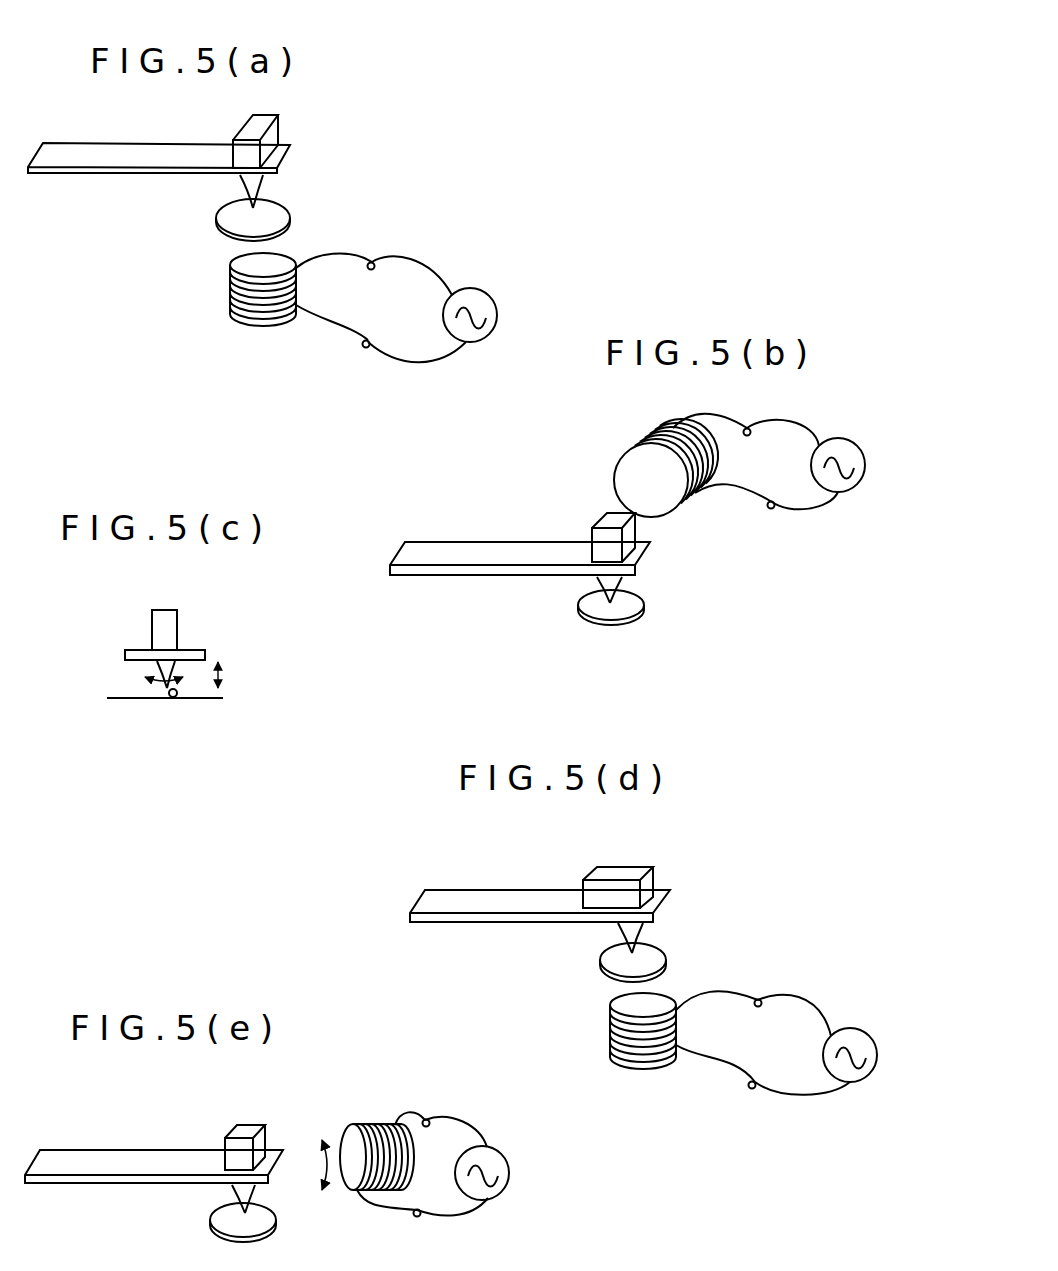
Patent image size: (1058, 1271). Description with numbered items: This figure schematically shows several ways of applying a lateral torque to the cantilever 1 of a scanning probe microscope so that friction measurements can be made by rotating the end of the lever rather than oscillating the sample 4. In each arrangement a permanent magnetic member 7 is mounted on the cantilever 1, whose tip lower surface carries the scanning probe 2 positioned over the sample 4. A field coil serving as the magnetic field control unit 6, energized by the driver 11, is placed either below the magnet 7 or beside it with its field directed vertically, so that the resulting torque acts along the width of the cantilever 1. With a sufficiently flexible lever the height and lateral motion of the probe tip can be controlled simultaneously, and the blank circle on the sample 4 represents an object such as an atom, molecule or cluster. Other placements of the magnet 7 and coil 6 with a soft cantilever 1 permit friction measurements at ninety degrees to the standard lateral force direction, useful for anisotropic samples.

In FIG. 5A, the cantilever 1 is at (100, 160).
In FIG. 5B, the cantilever 1 is at (495, 553).
In FIG. 5C, the cantilever 1 is at (202, 650).
In FIG. 5D, the cantilever 1 is at (487, 903).
In FIG. 5E, the cantilever 1 is at (148, 1160).
In FIG. 5A, the scanning probe 2 is at (247, 183).
In FIG. 5B, the scanning probe 2 is at (620, 580).
In FIG. 5C, the scanning probe 2 is at (158, 665).
In FIG. 5D, the scanning probe 2 is at (623, 925).
In FIG. 5E, the scanning probe 2 is at (240, 1190).
In FIG. 5A, the sample 4 is at (230, 225).
In FIG. 5B, the sample 4 is at (588, 607).
In FIG. 5C, the sample 4 is at (158, 737).
In FIG. 5D, the sample 4 is at (617, 963).
In FIG. 5E, the sample 4 is at (268, 1218).
In FIG. 5A, the magnetic field control unit 6 is at (237, 313).
In FIG. 5B, the magnetic field control unit 6 is at (665, 492).
In FIG. 5D, the magnetic field control unit 6 is at (610, 1022).
In FIG. 5E, the magnetic field control unit 6 is at (343, 1187).
In FIG. 5A, the magnetic member 7 is at (257, 123).
In FIG. 5B, the magnetic member 7 is at (598, 517).
In FIG. 5C, the magnetic member 7 is at (178, 628).
In FIG. 5D, the magnetic member 7 is at (623, 873).
In FIG. 5E, the magnetic member 7 is at (262, 1142).
In FIG. 5A, the driver 11 is at (478, 288).
In FIG. 5B, the driver 11 is at (840, 440).
In FIG. 5D, the driver 11 is at (855, 1028).
In FIG. 5E, the driver 11 is at (505, 1190).